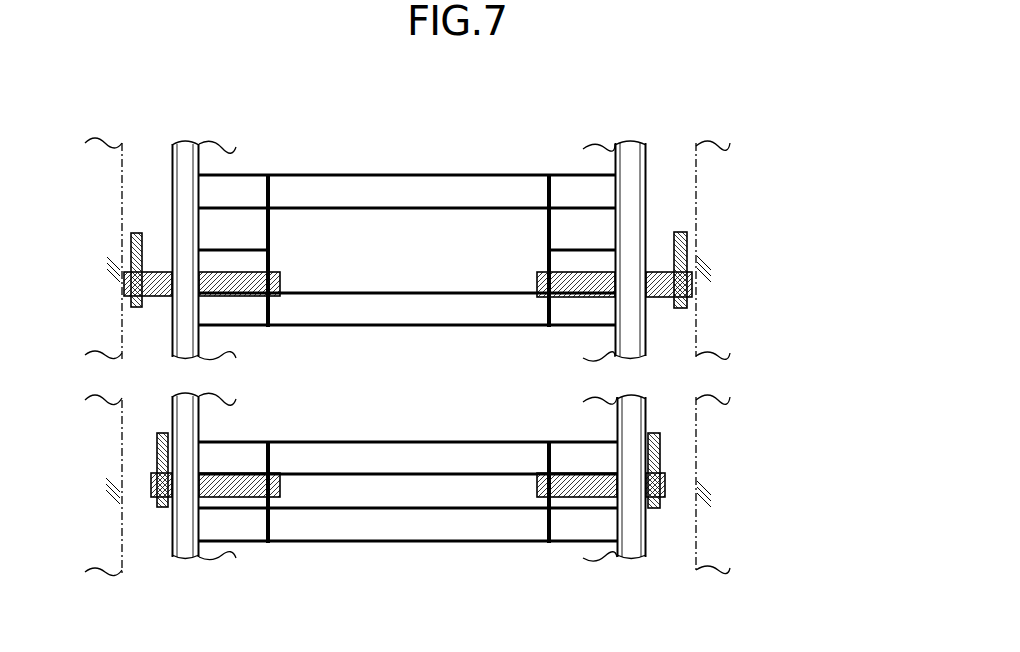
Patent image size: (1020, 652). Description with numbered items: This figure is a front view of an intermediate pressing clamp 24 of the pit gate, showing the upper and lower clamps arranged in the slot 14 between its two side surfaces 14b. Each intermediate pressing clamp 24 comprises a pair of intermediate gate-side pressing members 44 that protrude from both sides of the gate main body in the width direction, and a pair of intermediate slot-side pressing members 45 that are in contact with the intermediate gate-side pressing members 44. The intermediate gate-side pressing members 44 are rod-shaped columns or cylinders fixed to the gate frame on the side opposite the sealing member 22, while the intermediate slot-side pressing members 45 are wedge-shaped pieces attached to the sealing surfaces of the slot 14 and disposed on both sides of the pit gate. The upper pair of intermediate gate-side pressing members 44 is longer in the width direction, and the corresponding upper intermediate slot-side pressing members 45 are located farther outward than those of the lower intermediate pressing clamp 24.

The sealing member 22 is at (632, 162).
The side surfaces 14b is at (124, 198).
The intermediate slot-side pressing members 45 is at (130, 243).
The intermediate gate-side pressing members 44 is at (160, 297).
The intermediate pressing clamp 24 is at (742, 552).
The slot 14 is at (667, 538).